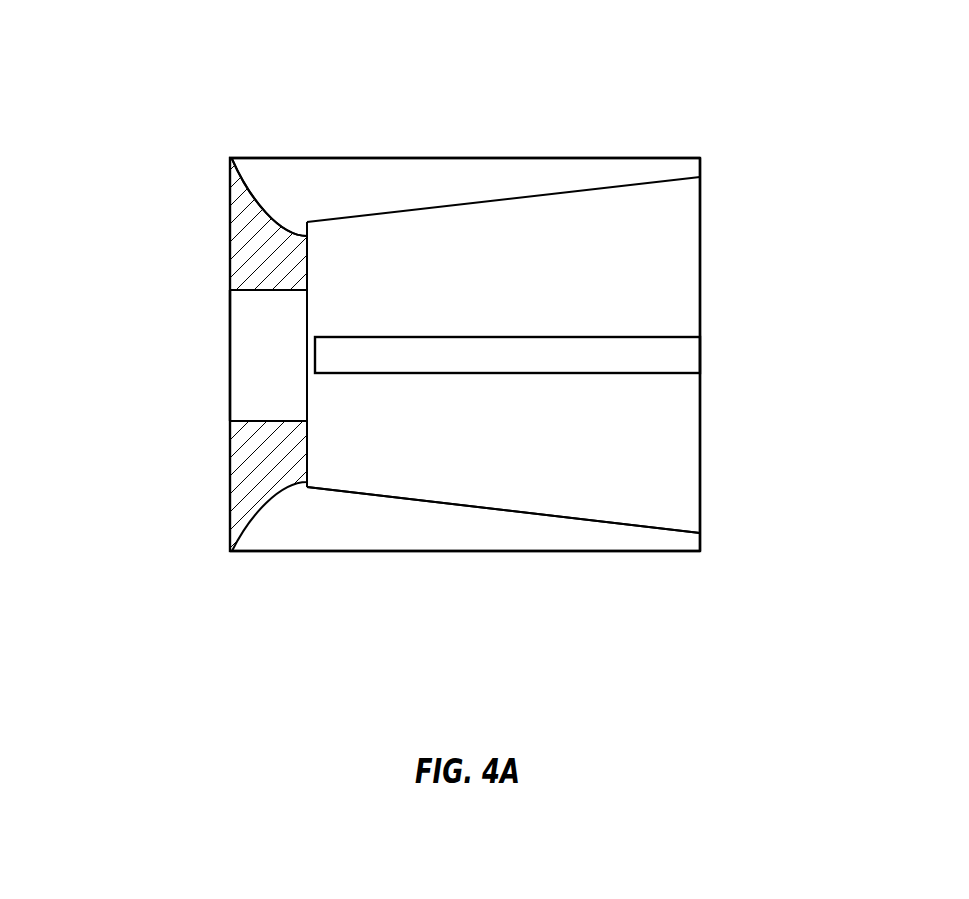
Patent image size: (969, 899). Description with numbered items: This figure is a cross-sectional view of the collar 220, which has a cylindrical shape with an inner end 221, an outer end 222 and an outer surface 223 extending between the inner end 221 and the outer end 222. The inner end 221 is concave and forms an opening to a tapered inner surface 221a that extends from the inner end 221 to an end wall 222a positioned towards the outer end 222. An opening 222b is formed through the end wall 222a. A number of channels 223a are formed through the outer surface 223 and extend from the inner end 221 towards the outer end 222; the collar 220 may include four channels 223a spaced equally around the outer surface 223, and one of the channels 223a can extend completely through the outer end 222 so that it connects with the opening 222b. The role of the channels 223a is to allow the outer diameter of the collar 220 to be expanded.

The collar 220 is at (152, 90).
The inner end 221 is at (717, 482).
The tapered inner surface 221a is at (569, 532).
The outer end 222 is at (218, 278).
The end wall 222a is at (288, 262).
The opening 222b is at (246, 397).
The outer surface 223 is at (612, 152).
The channels 223a is at (398, 160).